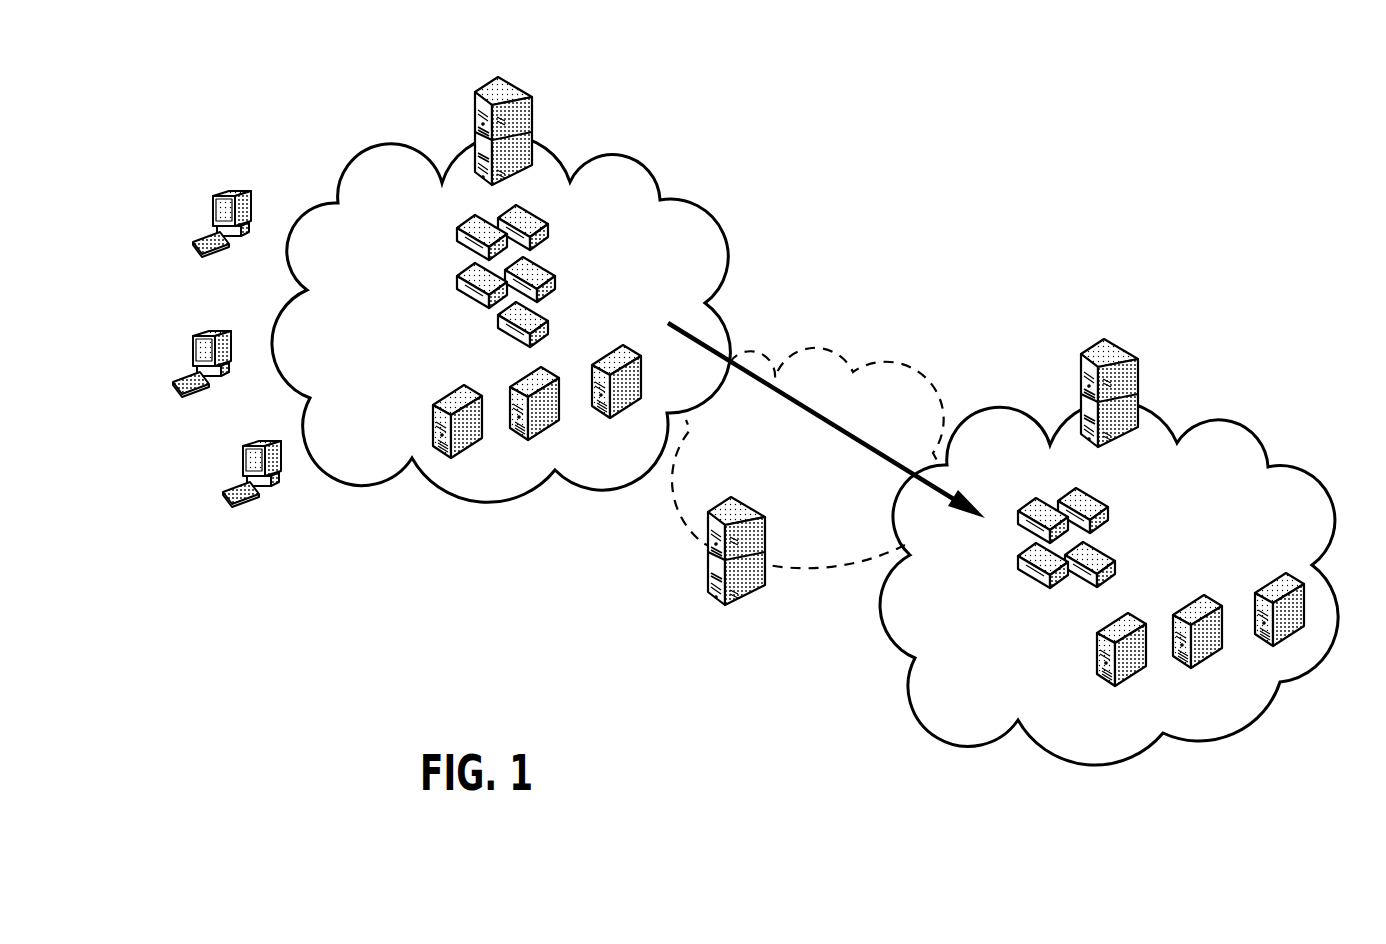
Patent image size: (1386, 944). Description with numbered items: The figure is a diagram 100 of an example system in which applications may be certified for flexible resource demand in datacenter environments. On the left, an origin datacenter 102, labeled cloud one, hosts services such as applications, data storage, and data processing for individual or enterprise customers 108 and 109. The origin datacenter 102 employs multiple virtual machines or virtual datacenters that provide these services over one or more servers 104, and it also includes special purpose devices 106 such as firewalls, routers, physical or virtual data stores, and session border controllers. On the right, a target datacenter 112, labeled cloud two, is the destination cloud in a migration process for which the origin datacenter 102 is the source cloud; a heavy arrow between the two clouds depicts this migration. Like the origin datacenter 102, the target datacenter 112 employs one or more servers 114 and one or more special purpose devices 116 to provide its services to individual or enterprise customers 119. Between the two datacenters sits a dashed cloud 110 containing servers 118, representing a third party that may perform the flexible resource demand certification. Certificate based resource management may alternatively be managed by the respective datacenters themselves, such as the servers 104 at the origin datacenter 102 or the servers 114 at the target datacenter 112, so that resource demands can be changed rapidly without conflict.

The diagram 100 is at (1233, 125).
The origin datacenter 102 is at (412, 335).
The servers 104 is at (514, 67).
The special purpose devices 106 is at (563, 224).
The individual or enterprise customers 108 is at (233, 480).
The individual or enterprise customers 109 is at (615, 431).
The cloud 110 is at (849, 350).
The target datacenter 112 is at (1045, 656).
The servers 114 is at (1120, 332).
The special purpose devices 116 is at (1119, 513).
The servers 118 is at (759, 612).
The individual or enterprise customers 119 is at (1276, 660).